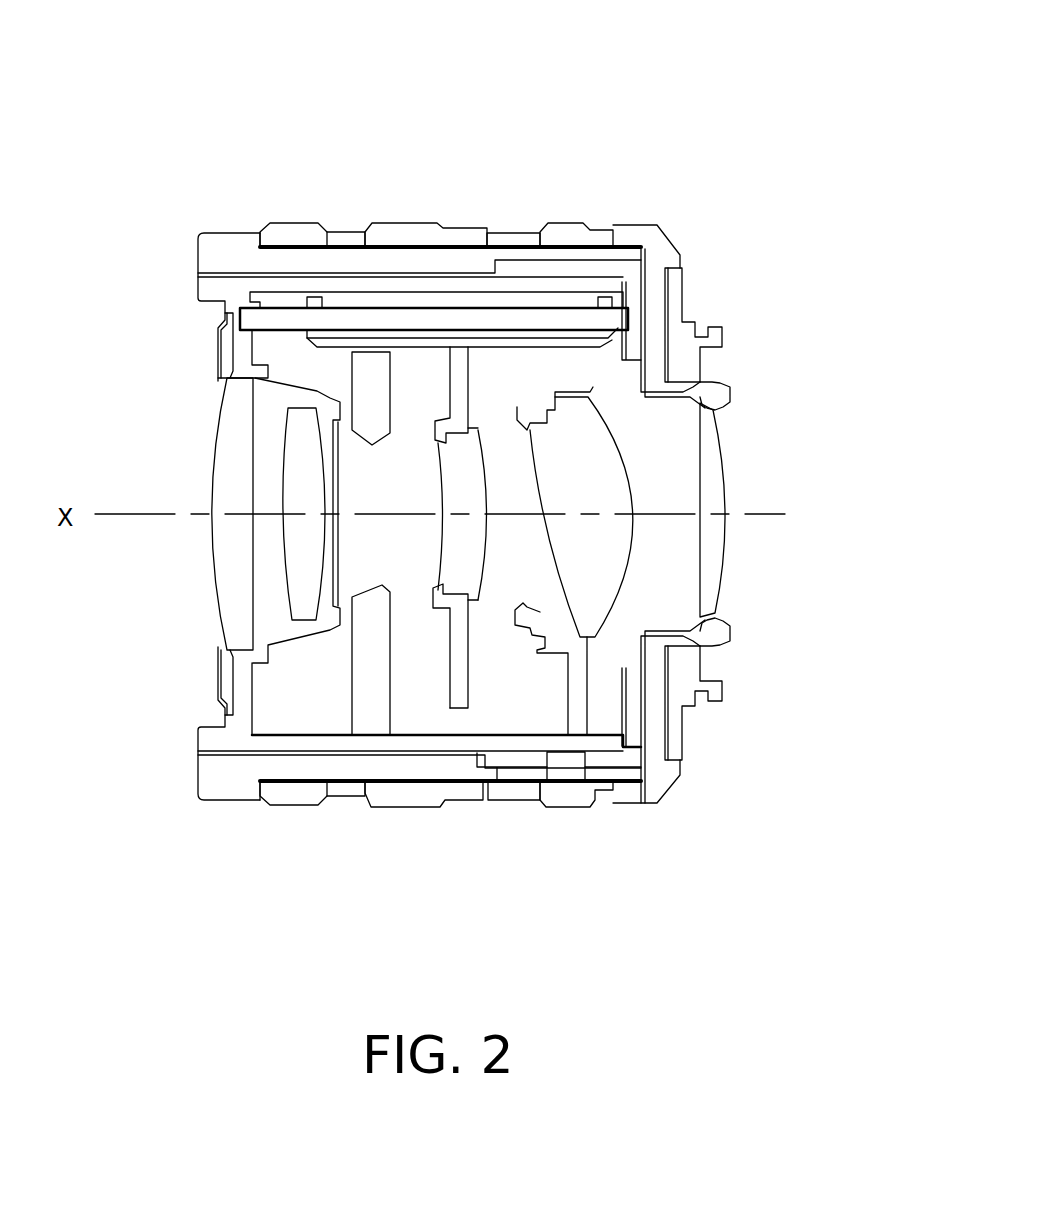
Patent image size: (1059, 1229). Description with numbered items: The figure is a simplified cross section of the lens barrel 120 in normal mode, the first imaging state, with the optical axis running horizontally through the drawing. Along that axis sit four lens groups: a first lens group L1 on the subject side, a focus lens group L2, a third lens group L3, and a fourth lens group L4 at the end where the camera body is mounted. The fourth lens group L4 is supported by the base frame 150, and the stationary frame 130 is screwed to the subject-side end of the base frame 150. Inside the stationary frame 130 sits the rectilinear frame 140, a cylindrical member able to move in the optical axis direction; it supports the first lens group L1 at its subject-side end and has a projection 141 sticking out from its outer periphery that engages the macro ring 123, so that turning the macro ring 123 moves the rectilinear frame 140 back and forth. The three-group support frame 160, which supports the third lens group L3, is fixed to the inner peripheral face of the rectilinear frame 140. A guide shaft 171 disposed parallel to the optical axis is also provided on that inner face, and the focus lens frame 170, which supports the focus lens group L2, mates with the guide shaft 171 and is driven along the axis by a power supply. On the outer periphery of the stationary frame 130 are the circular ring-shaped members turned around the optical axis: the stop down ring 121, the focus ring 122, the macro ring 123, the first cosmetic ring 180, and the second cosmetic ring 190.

The lens barrel 120 is at (690, 128).
The stop down ring 121 is at (280, 233).
The focus ring 122 is at (397, 237).
The macro ring 123 is at (563, 233).
The stationary frame 130 is at (237, 783).
The rectilinear frame 140 is at (213, 292).
The projection 141 is at (567, 765).
The base frame 150 is at (657, 250).
The three-group support frame 160 is at (580, 685).
The focus lens frame 170 is at (463, 410).
The guide shaft 171 is at (617, 318).
The first cosmetic ring 180 is at (343, 240).
The second cosmetic ring 190 is at (505, 233).
The first lens group L1 is at (237, 580).
The focus lens group L2 is at (437, 573).
The third lens group L3 is at (563, 612).
The fourth lens group L4 is at (713, 560).